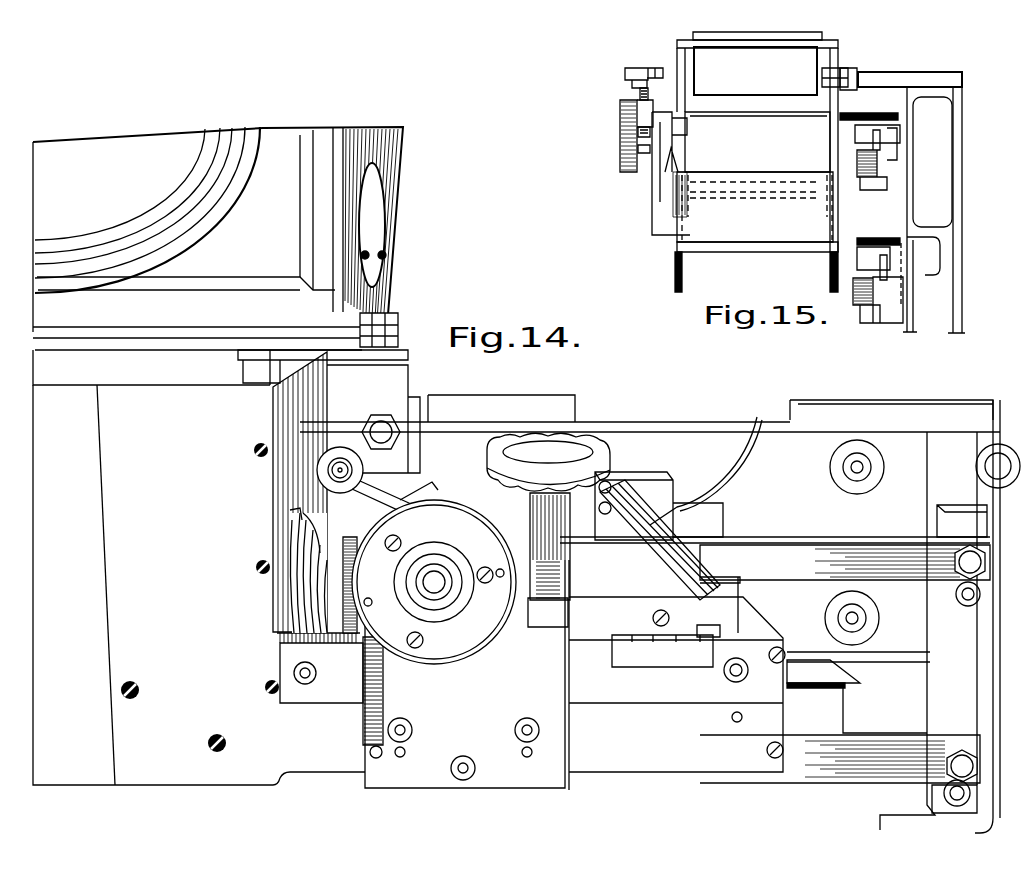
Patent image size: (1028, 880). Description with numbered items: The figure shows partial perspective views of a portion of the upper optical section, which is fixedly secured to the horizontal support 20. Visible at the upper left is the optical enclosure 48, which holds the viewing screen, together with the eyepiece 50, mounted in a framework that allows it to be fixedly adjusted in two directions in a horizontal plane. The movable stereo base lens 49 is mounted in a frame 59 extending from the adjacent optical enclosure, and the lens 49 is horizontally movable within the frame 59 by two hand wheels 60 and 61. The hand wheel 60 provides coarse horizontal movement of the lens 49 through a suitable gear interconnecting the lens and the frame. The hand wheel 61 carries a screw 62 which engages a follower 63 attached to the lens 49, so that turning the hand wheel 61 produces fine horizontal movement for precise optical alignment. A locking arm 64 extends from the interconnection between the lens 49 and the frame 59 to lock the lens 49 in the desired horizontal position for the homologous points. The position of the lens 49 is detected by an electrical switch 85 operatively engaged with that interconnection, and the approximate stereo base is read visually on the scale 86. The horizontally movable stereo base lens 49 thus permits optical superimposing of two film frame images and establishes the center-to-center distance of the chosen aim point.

In FIG. 14, the horizontal support 20 is at (988, 437).
In FIG. 14, the optical enclosure 48 is at (395, 170).
In FIG. 14, the stereo base lens 49 is at (300, 603).
In FIG. 14, the eyepiece 50 is at (53, 152).
In FIG. 14, the frame 59 is at (770, 624).
In FIG. 14, the hand wheel 60 is at (455, 648).
In FIG. 15, the hand wheel 60 is at (620, 128).
In FIG. 14, the hand wheel 61 is at (590, 440).
In FIG. 15, the hand wheel 61 is at (637, 67).
In FIG. 14, the screw 62 is at (572, 570).
In FIG. 15, the screw 62 is at (640, 92).
In FIG. 14, the follower 63 is at (528, 602).
In FIG. 15, the follower 63 is at (638, 147).
In FIG. 14, the locking arm 64 is at (343, 450).
In FIG. 14, the electrical switch 85 is at (725, 545).
In FIG. 14, the scale 86 is at (672, 668).